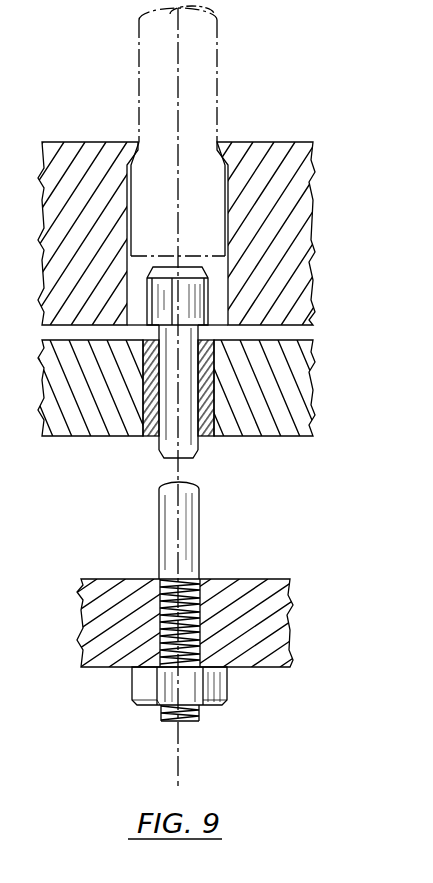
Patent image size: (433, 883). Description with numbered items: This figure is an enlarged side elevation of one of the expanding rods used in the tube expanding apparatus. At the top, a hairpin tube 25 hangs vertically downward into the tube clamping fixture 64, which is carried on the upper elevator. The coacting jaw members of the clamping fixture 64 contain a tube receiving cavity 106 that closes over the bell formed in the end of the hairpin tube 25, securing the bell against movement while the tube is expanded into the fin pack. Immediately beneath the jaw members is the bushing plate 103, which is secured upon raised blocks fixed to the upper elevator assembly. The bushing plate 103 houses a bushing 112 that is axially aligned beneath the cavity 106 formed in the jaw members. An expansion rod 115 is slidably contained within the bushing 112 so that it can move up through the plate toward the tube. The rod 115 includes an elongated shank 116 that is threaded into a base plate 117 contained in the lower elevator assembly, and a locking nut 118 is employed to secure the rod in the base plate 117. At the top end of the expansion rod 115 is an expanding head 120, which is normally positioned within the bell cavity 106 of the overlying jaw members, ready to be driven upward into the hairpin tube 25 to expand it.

The hairpin tube 25 is at (215, 78).
The tube clamping fixture 64 is at (324, 156).
The tube receiving cavity 106 is at (230, 232).
The expanding head 120 is at (208, 303).
The bushing plate 103 is at (283, 398).
The bushing 112 is at (215, 402).
The elongated shank 116 is at (163, 535).
The expansion rod 115 is at (216, 562).
The base plate 117 is at (283, 627).
The locking nut 118 is at (227, 684).